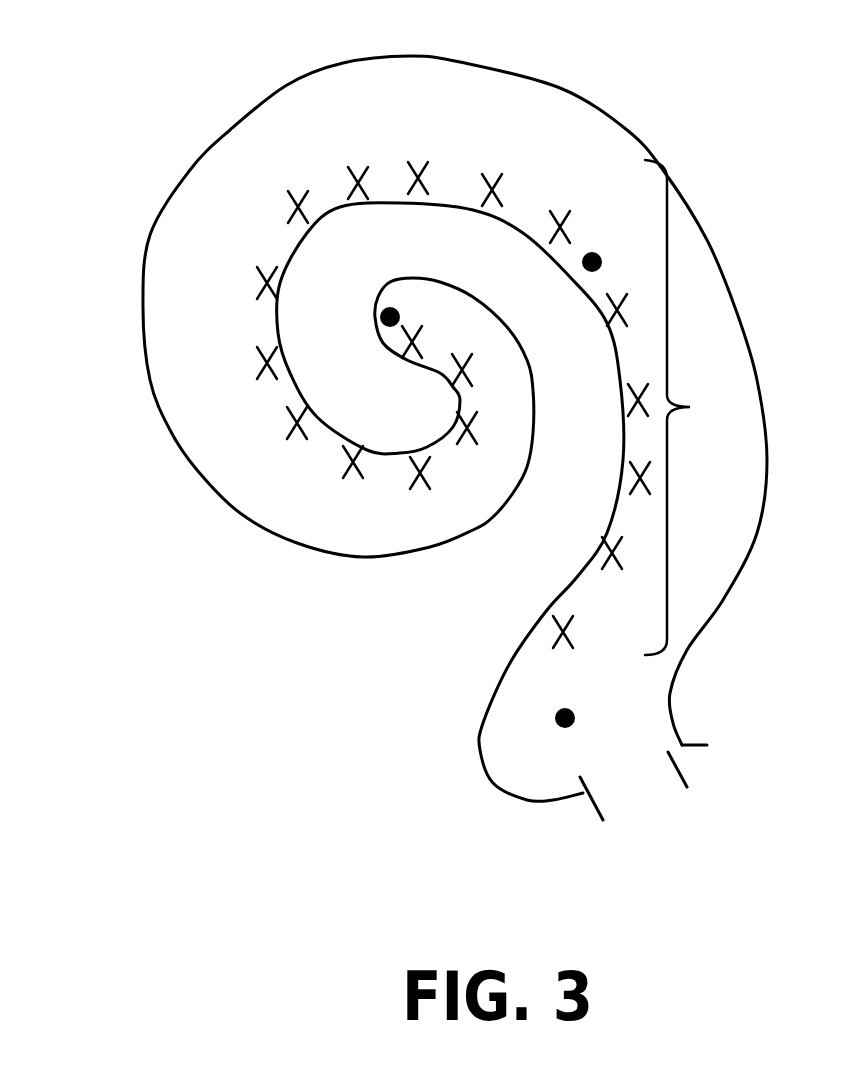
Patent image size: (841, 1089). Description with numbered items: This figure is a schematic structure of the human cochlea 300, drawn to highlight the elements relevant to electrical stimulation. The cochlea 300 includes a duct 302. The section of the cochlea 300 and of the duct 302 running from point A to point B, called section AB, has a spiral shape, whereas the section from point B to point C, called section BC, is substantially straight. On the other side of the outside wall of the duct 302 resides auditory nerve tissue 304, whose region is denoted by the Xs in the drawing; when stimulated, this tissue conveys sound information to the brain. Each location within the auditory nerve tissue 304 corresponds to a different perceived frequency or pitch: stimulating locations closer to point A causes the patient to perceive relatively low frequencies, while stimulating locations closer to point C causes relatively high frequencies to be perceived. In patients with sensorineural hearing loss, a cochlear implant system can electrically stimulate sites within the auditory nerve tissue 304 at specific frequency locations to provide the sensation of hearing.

The cochlea 300 is at (155, 152).
The duct 302 is at (368, 685).
The auditory nerve tissue 304 is at (693, 407).